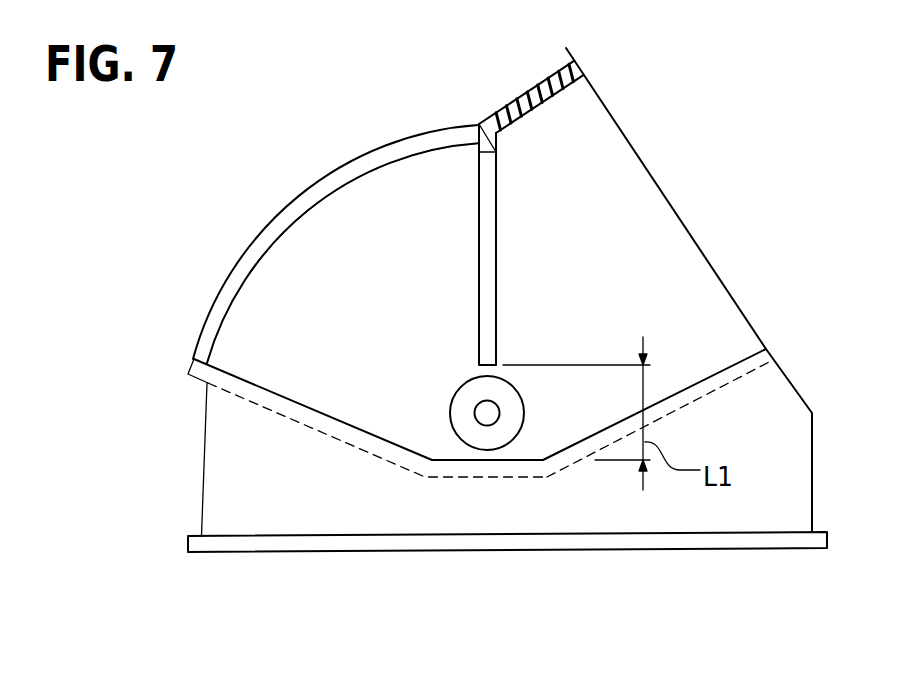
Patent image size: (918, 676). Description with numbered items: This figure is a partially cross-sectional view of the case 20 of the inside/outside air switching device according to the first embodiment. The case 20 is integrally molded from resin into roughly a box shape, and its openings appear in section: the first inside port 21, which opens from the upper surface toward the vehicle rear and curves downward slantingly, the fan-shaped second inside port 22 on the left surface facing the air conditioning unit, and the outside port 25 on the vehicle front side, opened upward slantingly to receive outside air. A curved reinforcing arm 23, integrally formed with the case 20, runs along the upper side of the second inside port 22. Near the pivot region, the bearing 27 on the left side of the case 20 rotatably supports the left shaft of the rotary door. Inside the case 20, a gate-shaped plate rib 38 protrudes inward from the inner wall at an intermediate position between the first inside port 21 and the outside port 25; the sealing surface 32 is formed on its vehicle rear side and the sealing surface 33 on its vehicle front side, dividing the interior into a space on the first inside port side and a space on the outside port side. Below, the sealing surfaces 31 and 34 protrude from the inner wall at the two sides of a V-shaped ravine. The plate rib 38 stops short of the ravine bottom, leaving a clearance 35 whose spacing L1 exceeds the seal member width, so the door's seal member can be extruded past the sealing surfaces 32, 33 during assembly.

The case 20 is at (505, 108).
The first inside port 21 is at (263, 215).
The second inside port 22 is at (360, 258).
The reinforcing arm 23 is at (297, 198).
The outside port 25 is at (689, 230).
The bearing 27 is at (487, 416).
The sealing surface 31 is at (253, 383).
The sealing surface 32 is at (479, 230).
The sealing surface 33 is at (497, 180).
The sealing surface 34 is at (700, 377).
The clearance 35 is at (530, 372).
The plate rib 38 is at (497, 243).